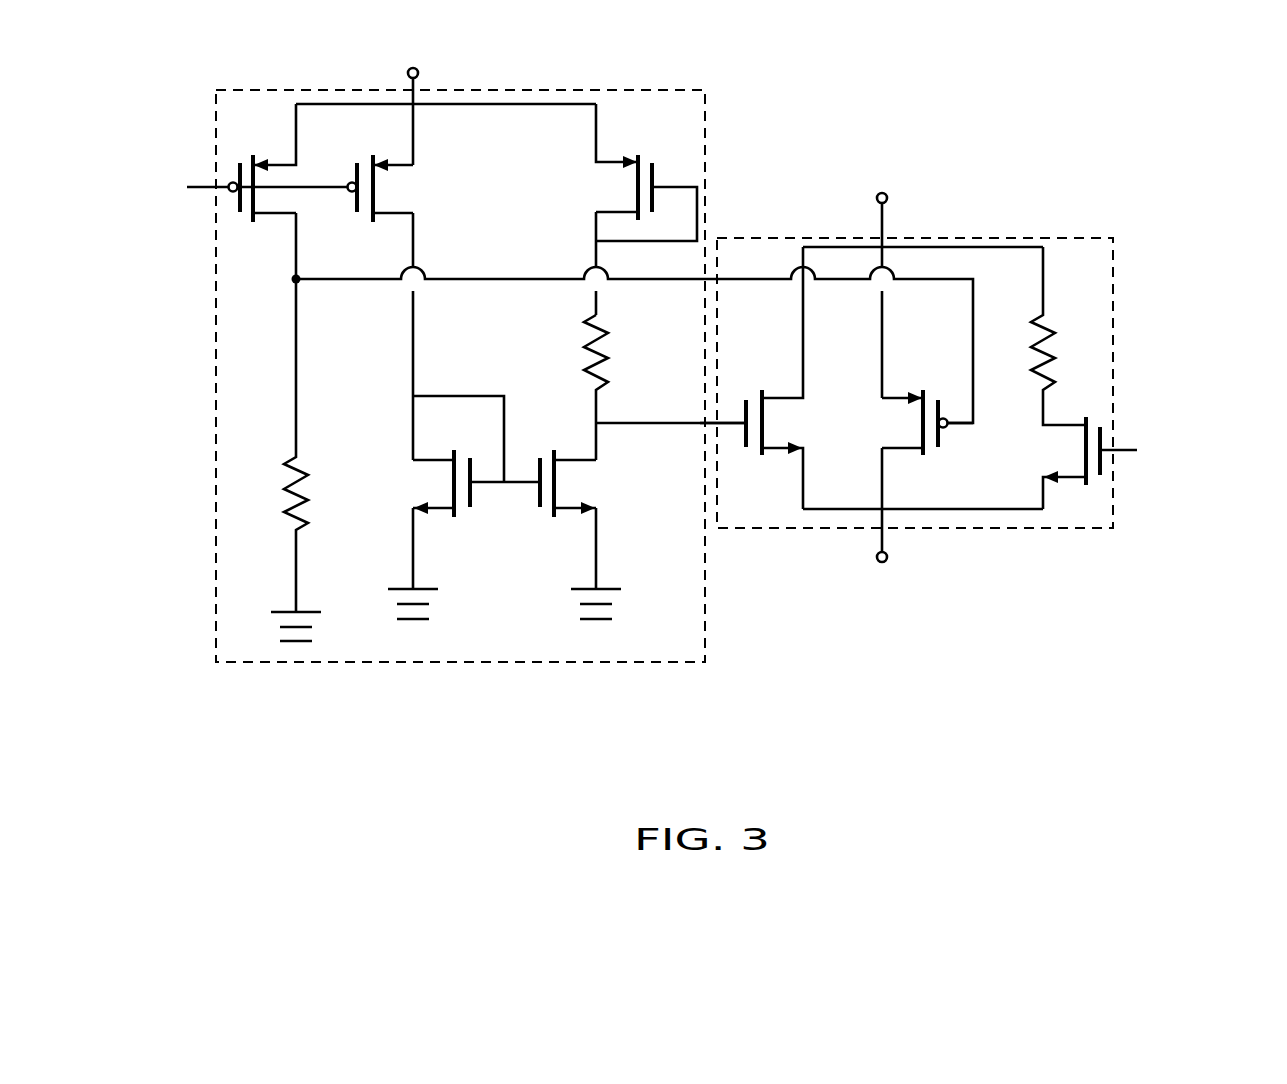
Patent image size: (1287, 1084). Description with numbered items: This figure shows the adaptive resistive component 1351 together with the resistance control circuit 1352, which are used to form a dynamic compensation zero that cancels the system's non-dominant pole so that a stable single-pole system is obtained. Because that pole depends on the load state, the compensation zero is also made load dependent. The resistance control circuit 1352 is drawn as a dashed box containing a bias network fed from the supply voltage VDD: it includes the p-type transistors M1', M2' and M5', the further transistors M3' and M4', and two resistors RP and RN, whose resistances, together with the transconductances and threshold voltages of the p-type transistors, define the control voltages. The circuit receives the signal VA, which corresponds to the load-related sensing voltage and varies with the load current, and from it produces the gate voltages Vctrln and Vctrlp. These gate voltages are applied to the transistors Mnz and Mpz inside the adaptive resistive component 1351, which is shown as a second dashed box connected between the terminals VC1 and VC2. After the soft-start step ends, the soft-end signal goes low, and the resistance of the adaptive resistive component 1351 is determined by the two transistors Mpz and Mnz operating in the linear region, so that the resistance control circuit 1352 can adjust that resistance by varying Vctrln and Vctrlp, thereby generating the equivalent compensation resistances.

The adaptive resistive component 1351 is at (987, 387).
The resistance control circuit 1352 is at (559, 392).
The p-type transistor M1' is at (289, 191).
The p-type transistor M2' is at (405, 307).
The transistor M3' is at (456, 507).
The transistor M4' is at (588, 534).
The p-type transistor M5' is at (626, 209).
The resistor RN is at (619, 387).
The resistor RP is at (282, 460).
The transistor Mnz is at (788, 378).
The transistor Mpz is at (905, 449).
The supply voltage VDD is at (410, 98).
The signal VA is at (187, 184).
The terminal VC1 is at (904, 278).
The terminal VC2 is at (882, 556).
The gate voltage Vctrln is at (747, 457).
The gate voltage Vctrlp is at (986, 446).